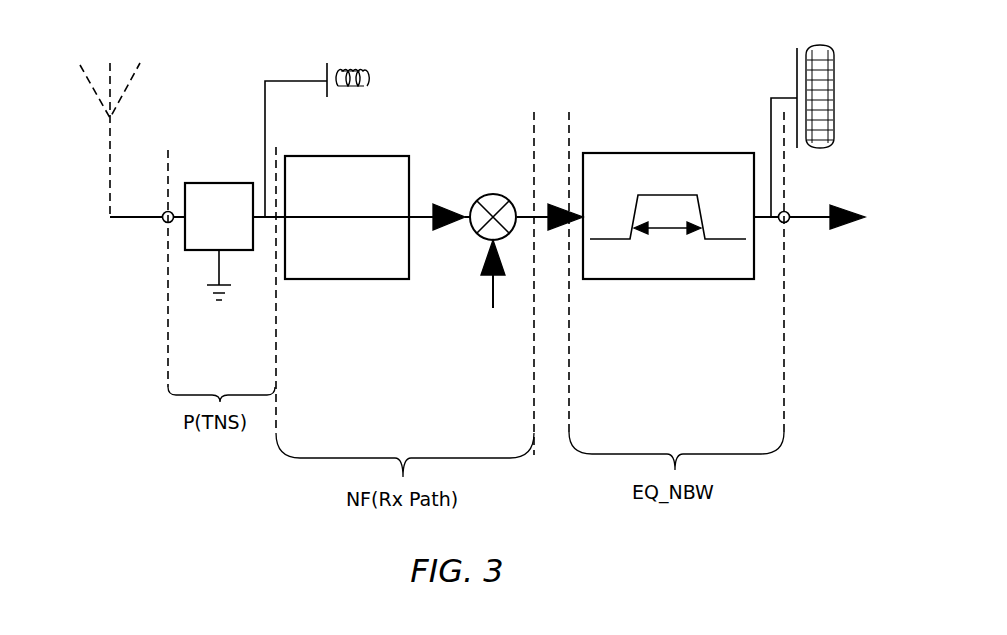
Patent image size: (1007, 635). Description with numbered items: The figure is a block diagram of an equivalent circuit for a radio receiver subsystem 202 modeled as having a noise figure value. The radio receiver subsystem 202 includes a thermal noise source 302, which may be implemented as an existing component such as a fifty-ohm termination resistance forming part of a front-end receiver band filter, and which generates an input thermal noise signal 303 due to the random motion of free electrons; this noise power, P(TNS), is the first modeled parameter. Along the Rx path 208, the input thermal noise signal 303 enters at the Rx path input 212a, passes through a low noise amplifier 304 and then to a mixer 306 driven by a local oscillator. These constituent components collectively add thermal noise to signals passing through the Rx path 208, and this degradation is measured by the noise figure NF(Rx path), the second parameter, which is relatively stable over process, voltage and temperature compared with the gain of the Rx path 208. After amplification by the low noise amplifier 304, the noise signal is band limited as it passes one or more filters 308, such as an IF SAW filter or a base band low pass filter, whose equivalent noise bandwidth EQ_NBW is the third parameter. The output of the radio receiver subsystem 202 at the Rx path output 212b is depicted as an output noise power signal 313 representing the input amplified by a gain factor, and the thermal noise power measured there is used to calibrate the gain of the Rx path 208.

The radio receiver subsystem 202 is at (233, 50).
The Rx path 208 is at (264, 228).
The Rx path input 212a is at (163, 222).
The Rx path output 212b is at (788, 223).
The thermal noise source 302 is at (229, 183).
The input thermal noise signal 303 is at (290, 82).
The low noise amplifier 304 is at (377, 155).
The mixer 306 is at (500, 188).
The filters 308 is at (688, 153).
The output noise power signal 313 is at (780, 98).